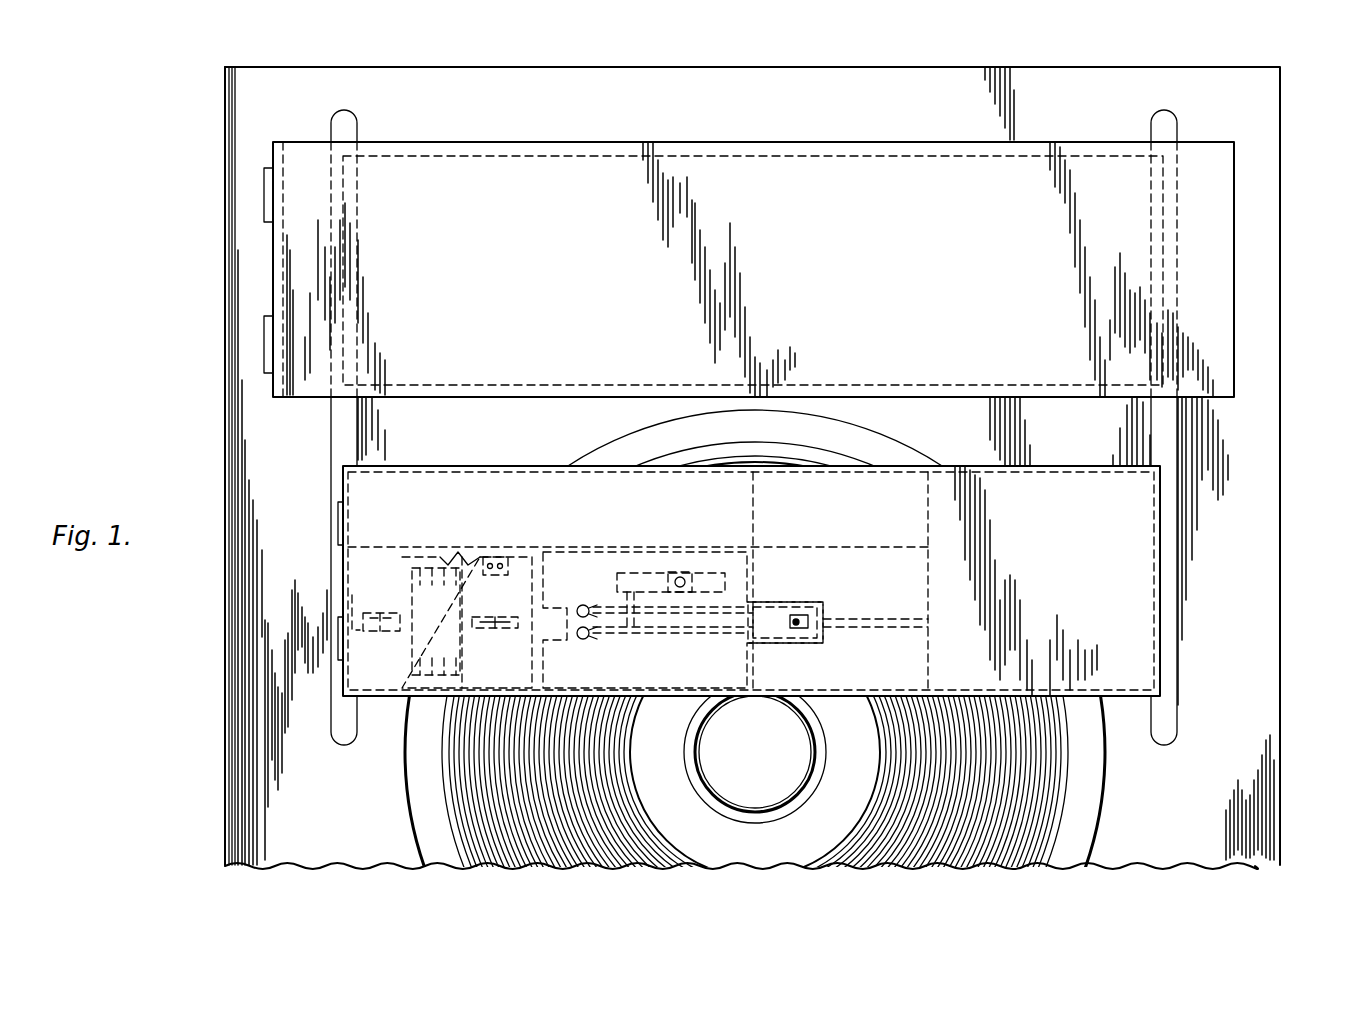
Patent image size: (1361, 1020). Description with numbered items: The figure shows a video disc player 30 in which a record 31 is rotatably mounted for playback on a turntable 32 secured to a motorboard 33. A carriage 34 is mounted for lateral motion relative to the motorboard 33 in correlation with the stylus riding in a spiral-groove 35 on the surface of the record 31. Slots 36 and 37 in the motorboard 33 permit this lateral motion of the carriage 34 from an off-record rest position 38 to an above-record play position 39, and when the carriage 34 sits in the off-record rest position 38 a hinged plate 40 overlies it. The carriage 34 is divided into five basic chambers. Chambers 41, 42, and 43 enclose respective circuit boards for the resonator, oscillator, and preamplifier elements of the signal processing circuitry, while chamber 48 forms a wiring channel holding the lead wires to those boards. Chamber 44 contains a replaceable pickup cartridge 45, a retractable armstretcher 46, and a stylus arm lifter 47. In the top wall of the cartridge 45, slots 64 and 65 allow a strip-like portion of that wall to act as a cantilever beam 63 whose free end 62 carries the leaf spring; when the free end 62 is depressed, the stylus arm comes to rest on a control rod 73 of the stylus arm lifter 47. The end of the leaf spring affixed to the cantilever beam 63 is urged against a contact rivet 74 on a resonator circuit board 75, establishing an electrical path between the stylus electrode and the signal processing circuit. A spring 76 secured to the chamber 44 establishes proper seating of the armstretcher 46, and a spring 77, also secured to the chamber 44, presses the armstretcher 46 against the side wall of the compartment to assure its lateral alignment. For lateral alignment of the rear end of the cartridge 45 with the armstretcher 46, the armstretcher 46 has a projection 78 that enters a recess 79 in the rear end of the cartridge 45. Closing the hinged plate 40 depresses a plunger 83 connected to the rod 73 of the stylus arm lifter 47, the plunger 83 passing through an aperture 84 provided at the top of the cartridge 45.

The video disc player 30 is at (1293, 582).
The record 31 is at (1060, 802).
The turntable 32 is at (1092, 842).
The motorboard 33 is at (1278, 740).
The carriage 34 is at (498, 450).
The spiral-groove 35 is at (474, 800).
The slot 36 is at (342, 420).
The slot 37 is at (1165, 432).
The off-record rest position 38 is at (1236, 322).
The above-record play position 39 is at (1163, 620).
The hinged plate 40 is at (823, 143).
The chamber 41 is at (893, 667).
The chamber 42 is at (1084, 553).
The chamber 43 is at (846, 518).
The chamber 44 is at (388, 580).
The pickup cartridge 45 is at (581, 580).
The armstretcher 46 is at (509, 610).
The stylus arm lifter 47 is at (635, 578).
The chamber 48 is at (400, 520).
The free end 62 is at (770, 620).
The cantilever beam 63 is at (677, 623).
The slot 64 is at (733, 606).
The slot 65 is at (710, 637).
The control rod 73 is at (625, 629).
The contact rivet 74 is at (802, 615).
The resonator circuit board 75 is at (880, 622).
The spring 76 is at (497, 628).
The spring 77 is at (481, 553).
The projection 78 is at (553, 628).
The recess 79 is at (568, 643).
The plunger 83 is at (682, 577).
The aperture 84 is at (667, 577).